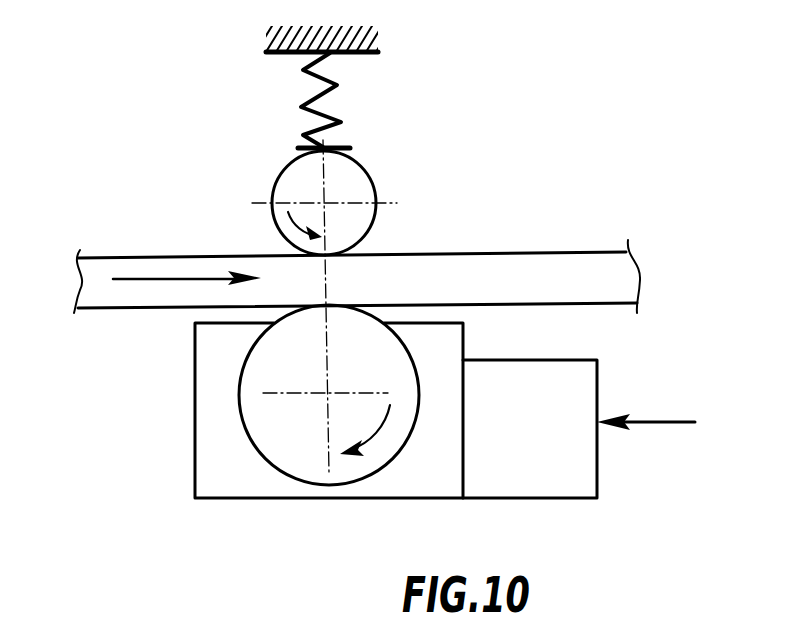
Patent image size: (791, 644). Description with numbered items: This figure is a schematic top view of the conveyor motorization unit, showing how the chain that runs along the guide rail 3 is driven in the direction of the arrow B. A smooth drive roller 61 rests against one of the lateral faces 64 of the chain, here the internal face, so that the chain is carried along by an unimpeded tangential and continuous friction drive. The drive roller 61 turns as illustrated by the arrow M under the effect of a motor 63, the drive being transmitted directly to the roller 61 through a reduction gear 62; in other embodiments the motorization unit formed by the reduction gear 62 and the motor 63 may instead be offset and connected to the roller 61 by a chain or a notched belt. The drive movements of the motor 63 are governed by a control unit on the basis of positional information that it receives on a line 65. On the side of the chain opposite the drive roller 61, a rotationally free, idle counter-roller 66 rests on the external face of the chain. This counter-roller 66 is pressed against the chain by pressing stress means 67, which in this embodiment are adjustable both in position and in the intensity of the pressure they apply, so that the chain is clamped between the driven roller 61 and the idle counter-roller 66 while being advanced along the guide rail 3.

The guide rail 3 is at (62, 283).
The arrow of chain drive direction B is at (190, 280).
The smooth drive roller 61 is at (258, 412).
The reduction gear 62 is at (237, 463).
The motor 63 is at (528, 475).
The lateral face of the chain 64 is at (548, 252).
The line 65 is at (642, 422).
The counter-roller 66 is at (343, 190).
The pressing stress means 67 is at (327, 110).
The arrow of drive roller rotation M is at (380, 437).